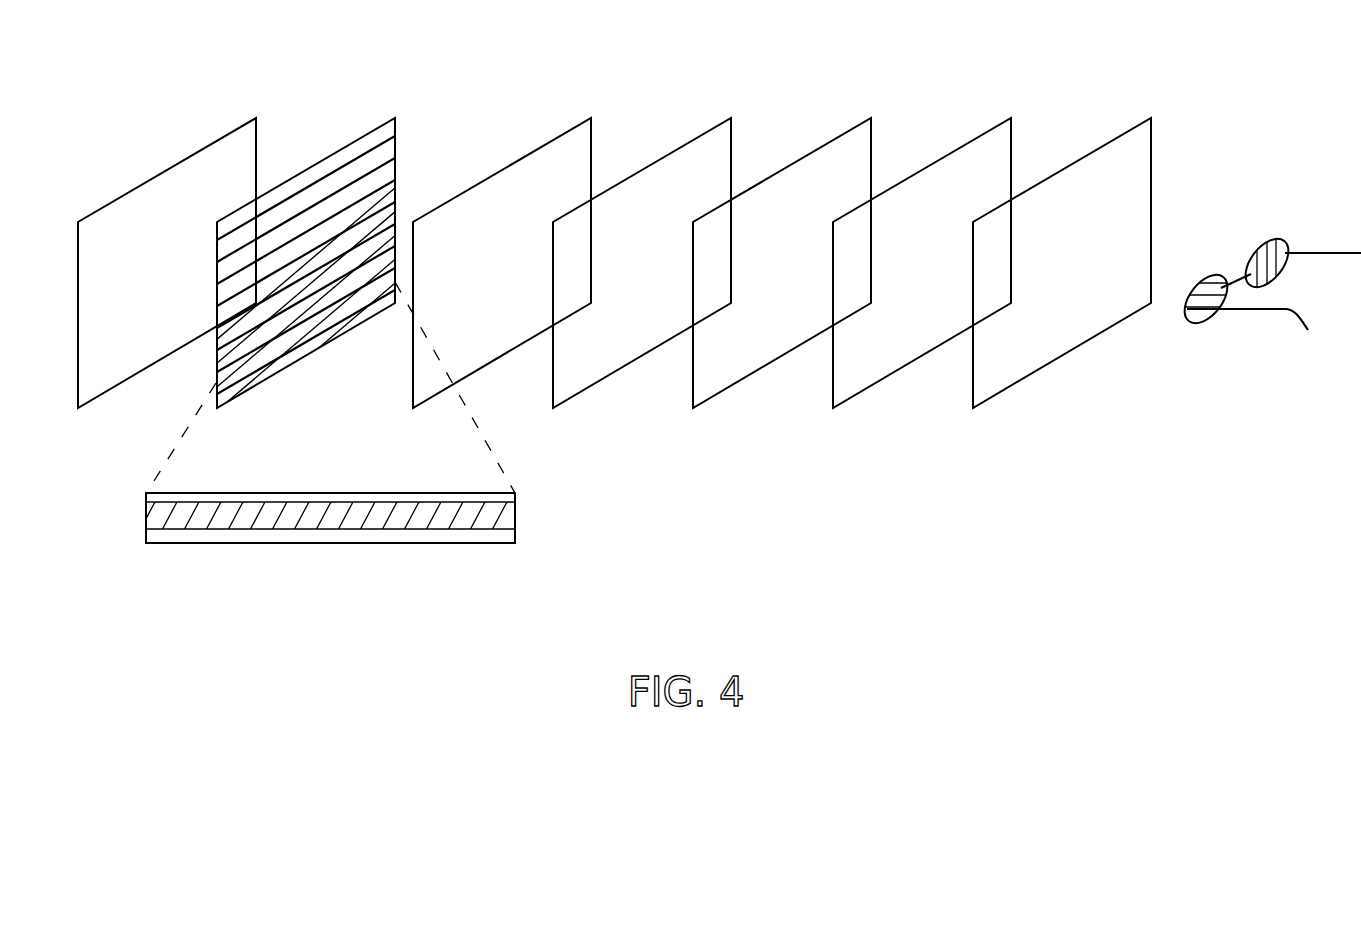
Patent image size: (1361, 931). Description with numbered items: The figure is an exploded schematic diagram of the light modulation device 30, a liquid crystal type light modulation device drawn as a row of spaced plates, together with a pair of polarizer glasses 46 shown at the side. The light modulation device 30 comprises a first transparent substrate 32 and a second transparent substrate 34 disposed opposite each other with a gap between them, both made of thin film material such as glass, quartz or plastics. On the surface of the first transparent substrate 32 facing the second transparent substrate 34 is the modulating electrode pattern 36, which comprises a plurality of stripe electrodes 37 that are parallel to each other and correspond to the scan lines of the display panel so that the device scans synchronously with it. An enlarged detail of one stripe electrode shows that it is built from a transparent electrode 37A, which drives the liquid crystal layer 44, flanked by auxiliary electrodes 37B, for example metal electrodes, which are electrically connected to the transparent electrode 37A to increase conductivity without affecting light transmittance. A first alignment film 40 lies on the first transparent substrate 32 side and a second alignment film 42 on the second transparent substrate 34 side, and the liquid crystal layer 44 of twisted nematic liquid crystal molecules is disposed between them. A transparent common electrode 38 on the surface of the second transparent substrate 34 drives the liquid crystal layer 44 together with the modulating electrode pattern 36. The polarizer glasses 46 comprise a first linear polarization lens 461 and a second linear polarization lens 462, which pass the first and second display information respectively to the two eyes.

The light modulation device 30 is at (100, 57).
The first transparent substrate 32 is at (216, 141).
The modulating electrode pattern 36 is at (356, 141).
The stripe electrodes 37 is at (600, 458).
The transparent electrodes 37A is at (515, 521).
The auxiliary electrodes 37B is at (515, 497).
The first alignment film 40 is at (552, 141).
The liquid crystal layer 44 is at (693, 141).
The second alignment film 42 is at (833, 141).
The transparent common electrode 38 is at (972, 141).
The second transparent substrate 34 is at (1112, 141).
The polarizer glasses 46 is at (1295, 190).
The first linear polarization lens 461 is at (1212, 275).
The second linear polarization lens 462 is at (1268, 242).